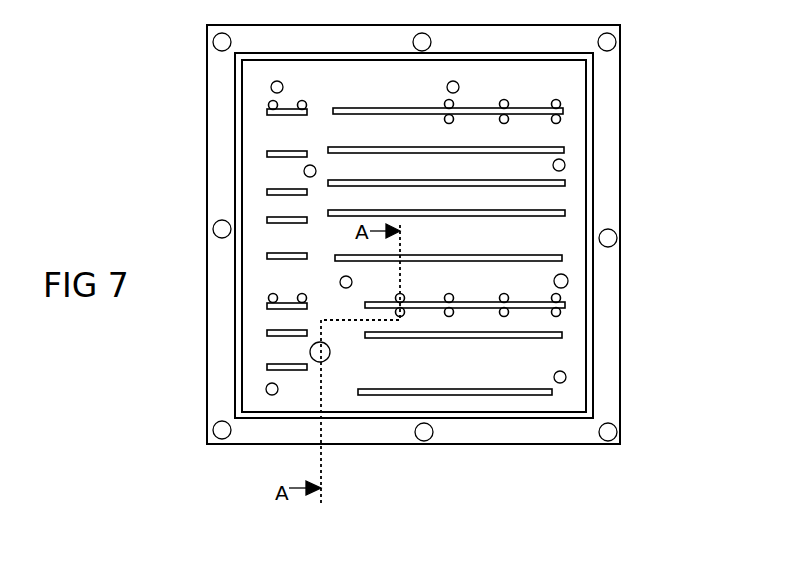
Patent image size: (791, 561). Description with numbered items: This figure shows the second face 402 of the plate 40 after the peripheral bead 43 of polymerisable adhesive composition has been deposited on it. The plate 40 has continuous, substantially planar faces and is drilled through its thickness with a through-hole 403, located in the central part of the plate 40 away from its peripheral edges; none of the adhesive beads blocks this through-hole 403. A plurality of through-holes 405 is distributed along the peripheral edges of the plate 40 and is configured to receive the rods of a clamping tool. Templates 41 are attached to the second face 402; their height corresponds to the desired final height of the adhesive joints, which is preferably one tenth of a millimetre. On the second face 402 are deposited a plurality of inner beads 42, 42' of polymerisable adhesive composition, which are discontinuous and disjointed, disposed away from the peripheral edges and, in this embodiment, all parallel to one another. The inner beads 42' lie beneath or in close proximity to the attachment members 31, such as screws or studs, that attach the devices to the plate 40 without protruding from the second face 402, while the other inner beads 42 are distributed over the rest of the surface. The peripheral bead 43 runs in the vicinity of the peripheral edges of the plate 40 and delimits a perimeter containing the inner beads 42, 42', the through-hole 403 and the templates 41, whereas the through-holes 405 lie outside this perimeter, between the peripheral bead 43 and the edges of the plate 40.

The plate 40 is at (622, 115).
The second face 402 is at (600, 185).
The through-holes 405 is at (608, 42).
The templates 41 is at (569, 281).
The inner beads 42 is at (523, 347).
The inner beads beneath attachment interfaces 42' is at (526, 312).
The attachment member 31 is at (403, 295).
The through-hole 403 is at (330, 354).
The peripheral bead 43 is at (478, 416).